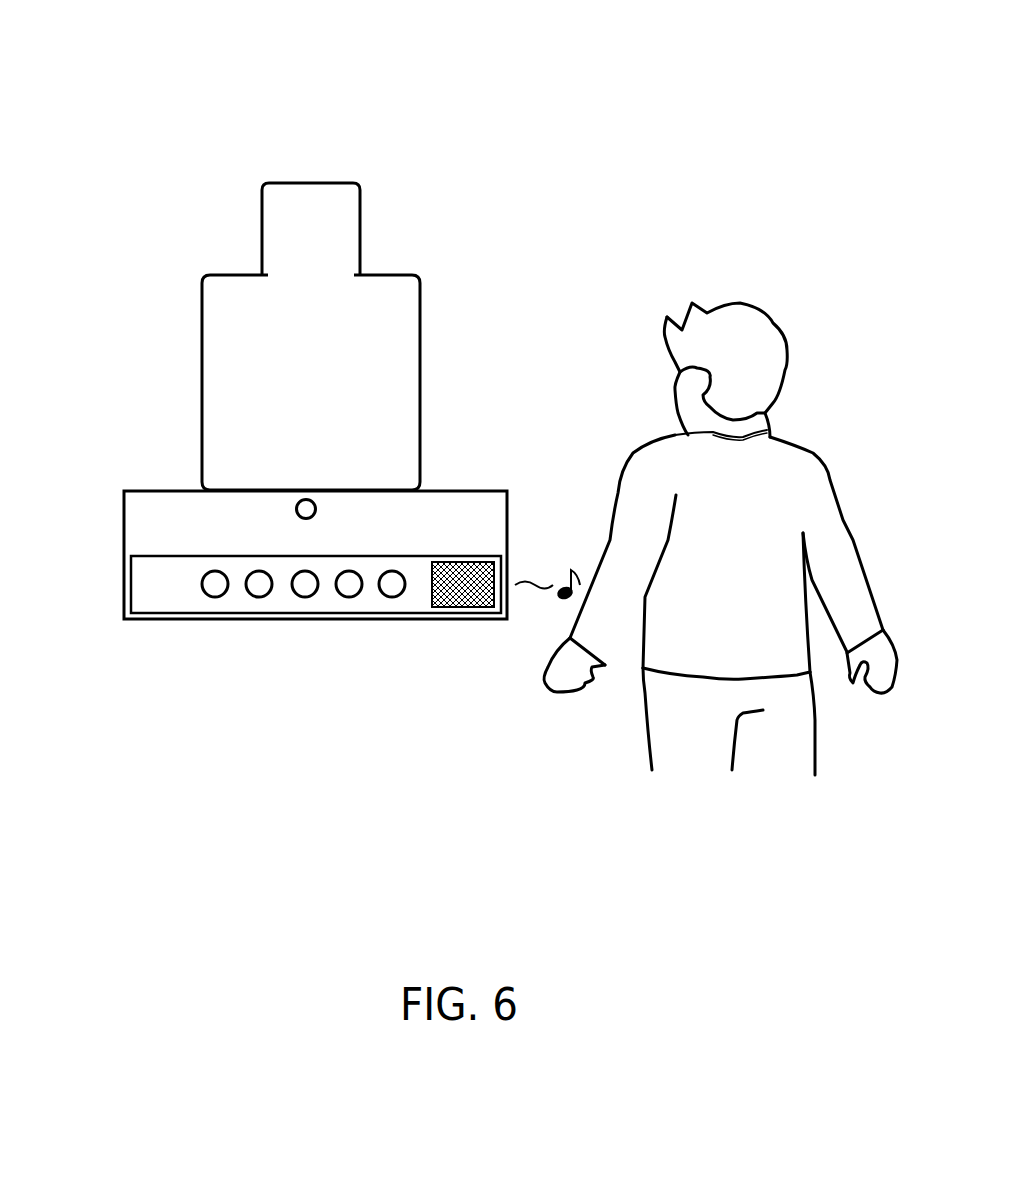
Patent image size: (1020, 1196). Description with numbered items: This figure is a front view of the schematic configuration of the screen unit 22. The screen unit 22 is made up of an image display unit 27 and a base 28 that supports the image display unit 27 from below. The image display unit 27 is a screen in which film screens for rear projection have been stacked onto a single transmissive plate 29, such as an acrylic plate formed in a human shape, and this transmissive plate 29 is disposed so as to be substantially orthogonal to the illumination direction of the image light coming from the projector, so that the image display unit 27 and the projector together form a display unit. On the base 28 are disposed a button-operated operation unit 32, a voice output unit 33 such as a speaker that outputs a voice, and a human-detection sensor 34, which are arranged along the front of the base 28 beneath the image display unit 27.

The dispensing system 22 is at (300, 58).
The container 27 is at (373, 331).
The base unit 28 is at (266, 596).
The container cap 29 is at (345, 227).
The buttons 32 is at (390, 592).
The speaker 33 is at (465, 605).
The indicator light 34 is at (296, 510).